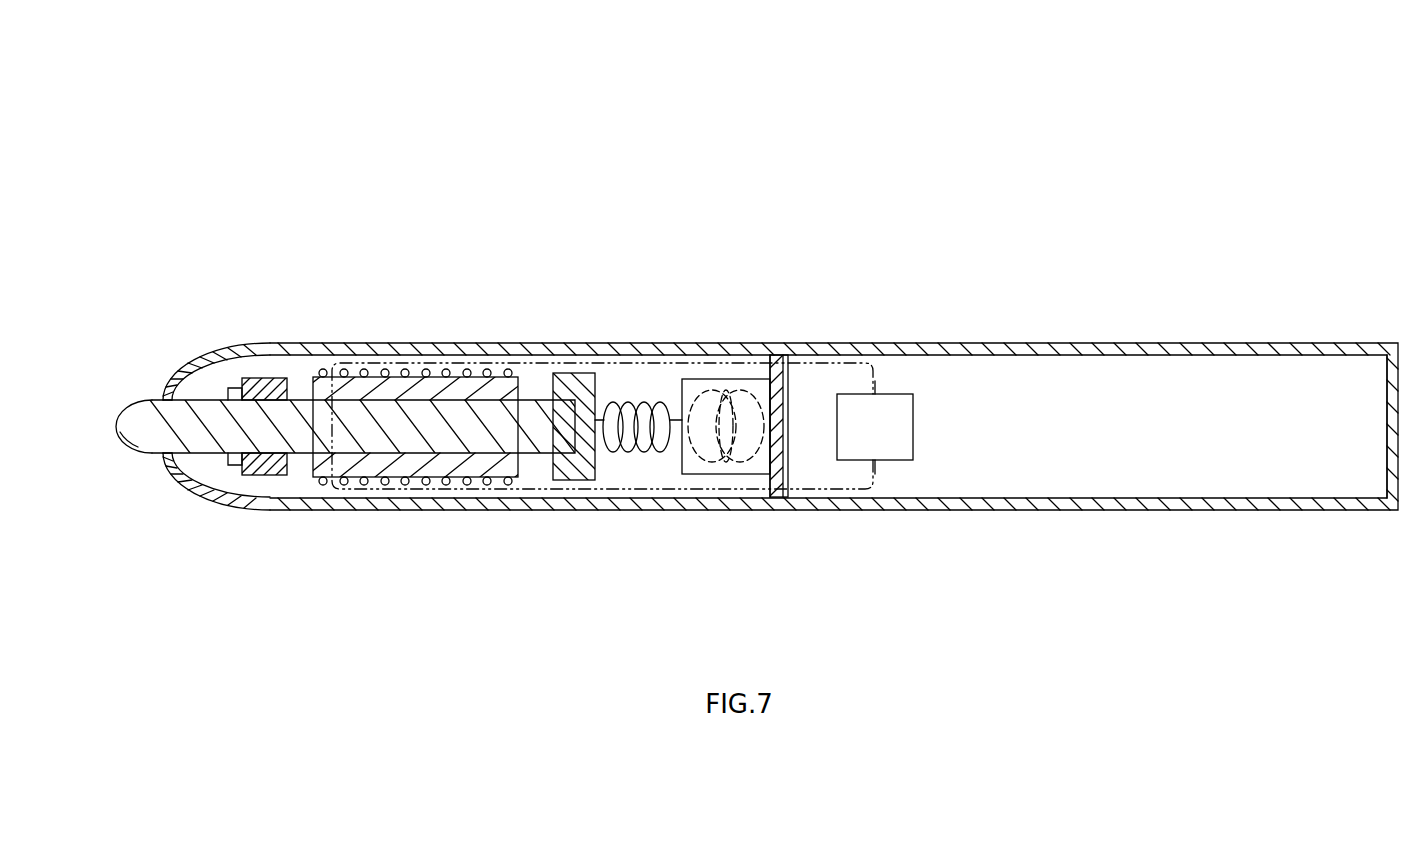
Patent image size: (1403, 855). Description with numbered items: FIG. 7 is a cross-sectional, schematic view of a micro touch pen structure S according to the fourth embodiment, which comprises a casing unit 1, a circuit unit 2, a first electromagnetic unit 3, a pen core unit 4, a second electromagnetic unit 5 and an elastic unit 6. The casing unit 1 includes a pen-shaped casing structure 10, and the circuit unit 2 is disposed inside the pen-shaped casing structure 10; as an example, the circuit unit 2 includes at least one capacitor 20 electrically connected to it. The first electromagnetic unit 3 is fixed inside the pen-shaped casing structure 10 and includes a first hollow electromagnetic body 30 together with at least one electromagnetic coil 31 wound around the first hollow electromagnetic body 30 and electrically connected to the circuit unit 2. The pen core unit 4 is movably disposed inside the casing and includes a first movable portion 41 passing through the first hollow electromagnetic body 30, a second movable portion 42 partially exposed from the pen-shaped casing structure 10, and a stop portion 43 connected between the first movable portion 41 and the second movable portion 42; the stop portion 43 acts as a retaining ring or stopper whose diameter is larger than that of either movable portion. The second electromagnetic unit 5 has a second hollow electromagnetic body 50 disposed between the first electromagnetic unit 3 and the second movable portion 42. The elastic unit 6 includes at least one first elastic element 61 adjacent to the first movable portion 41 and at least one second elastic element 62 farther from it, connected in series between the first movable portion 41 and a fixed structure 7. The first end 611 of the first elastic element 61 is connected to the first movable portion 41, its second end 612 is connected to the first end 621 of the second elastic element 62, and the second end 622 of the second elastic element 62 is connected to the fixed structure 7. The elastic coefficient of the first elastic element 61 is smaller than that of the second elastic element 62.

The micro touch pen structure S is at (119, 235).
The casing unit 1 is at (1168, 259).
The pen-shaped casing structure 10 is at (1178, 350).
The circuit unit 2 is at (940, 427).
The capacitor 20 is at (913, 427).
The first electromagnetic unit 3 is at (458, 269).
The first hollow electromagnetic body 30 is at (390, 385).
The electromagnetic coil 31 is at (445, 377).
The pen core unit 4 is at (145, 586).
The first movable portion 41 is at (200, 430).
The second movable portion 42 is at (167, 455).
The stop portion 43 is at (300, 427).
The second electromagnetic unit 5 is at (272, 269).
The second hollow electromagnetic body 50 is at (265, 388).
The elastic unit 6 is at (617, 268).
The first elastic element 61 is at (620, 402).
The first end of first elastic element 611 is at (604, 447).
The second end of first elastic element 612 is at (677, 437).
The second elastic element 62 is at (710, 380).
The first end of second elastic element 621 is at (683, 470).
The second end of second elastic element 622 is at (776, 445).
The fixed structure 7 is at (788, 380).